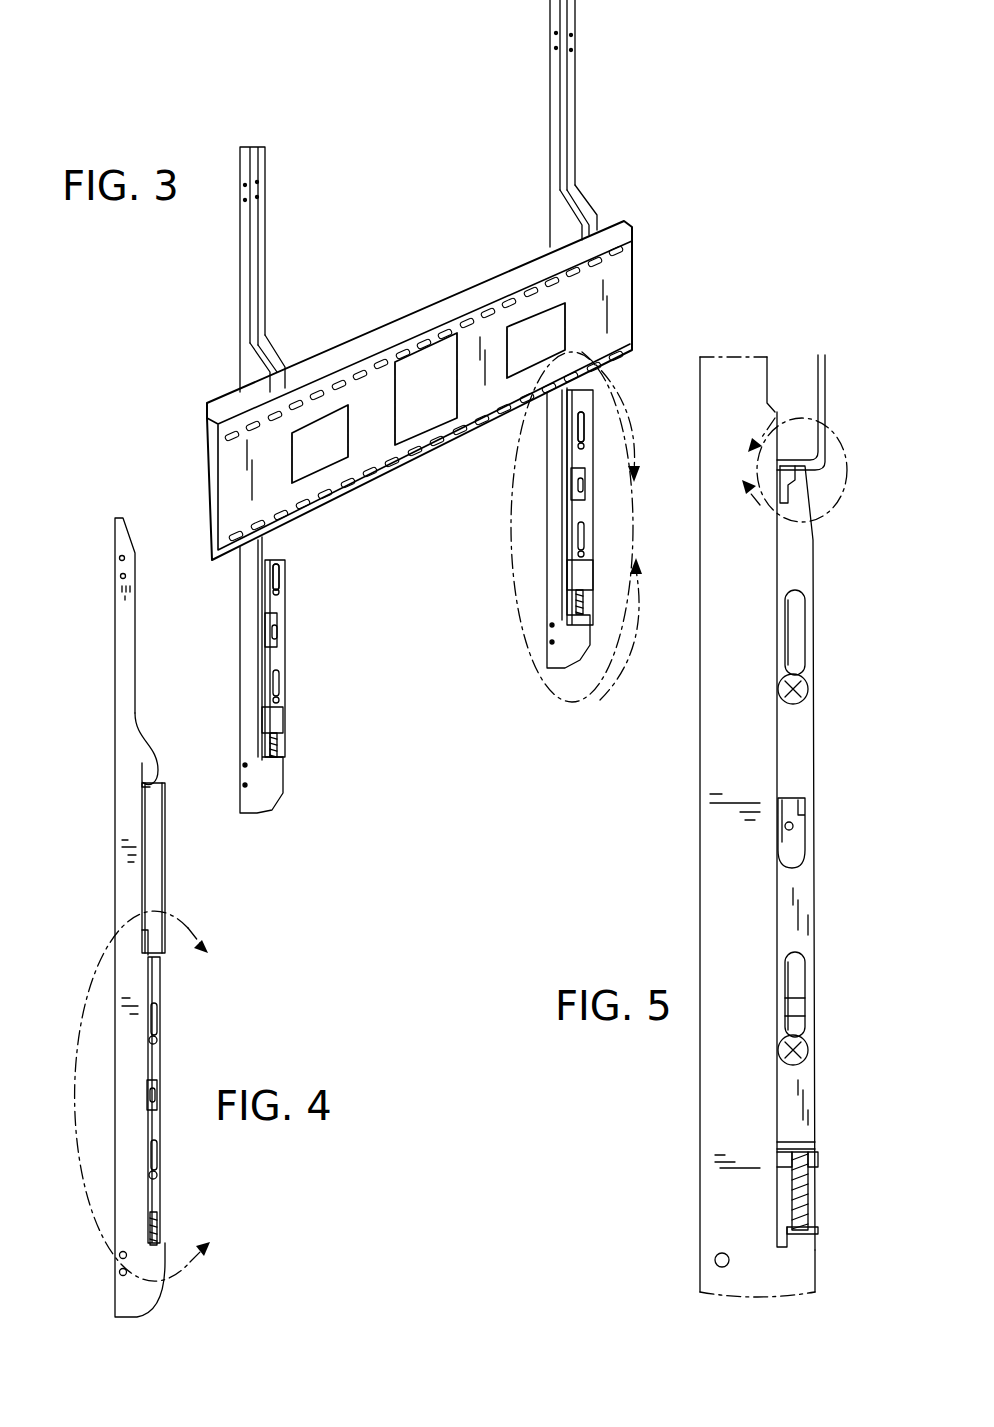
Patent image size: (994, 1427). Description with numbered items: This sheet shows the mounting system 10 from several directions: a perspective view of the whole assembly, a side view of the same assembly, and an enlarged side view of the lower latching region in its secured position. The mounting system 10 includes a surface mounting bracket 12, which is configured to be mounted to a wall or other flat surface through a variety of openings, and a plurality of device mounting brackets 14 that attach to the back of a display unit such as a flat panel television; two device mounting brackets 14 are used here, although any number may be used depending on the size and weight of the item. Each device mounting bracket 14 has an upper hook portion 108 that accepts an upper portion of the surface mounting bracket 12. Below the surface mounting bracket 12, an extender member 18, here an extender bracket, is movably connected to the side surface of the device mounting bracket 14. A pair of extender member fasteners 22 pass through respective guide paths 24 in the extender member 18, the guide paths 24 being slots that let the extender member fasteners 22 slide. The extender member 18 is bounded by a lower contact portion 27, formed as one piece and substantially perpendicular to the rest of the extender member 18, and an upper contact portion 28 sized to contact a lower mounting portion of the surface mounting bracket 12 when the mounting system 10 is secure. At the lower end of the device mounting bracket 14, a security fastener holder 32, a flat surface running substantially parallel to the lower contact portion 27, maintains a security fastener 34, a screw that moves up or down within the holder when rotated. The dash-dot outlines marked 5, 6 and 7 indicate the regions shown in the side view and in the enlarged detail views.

In FIG. 3, the mounting system 10 is at (340, 64).
In FIG. 3, the surface mounting bracket 12 is at (403, 323).
In FIG. 4, the surface mounting bracket 12 is at (165, 838).
In FIG. 3, the device mounting bracket 14 is at (260, 164).
In FIG. 4, the device mounting bracket 14 is at (130, 672).
In FIG. 5, the device mounting bracket 14 is at (725, 378).
In FIG. 3, the extender member 18 is at (580, 465).
In FIG. 4, the extender member 18 is at (157, 1127).
In FIG. 5, the extender member 18 is at (788, 755).
In FIG. 5, the extender member fastener 22 is at (787, 677).
In FIG. 3, the guide path 24 is at (583, 528).
In FIG. 5, the guide path 24 is at (795, 605).
In FIG. 5, the lower contact portion 27 is at (798, 1142).
In FIG. 5, the upper contact portion 28 is at (792, 470).
In FIG. 5, the security fastener holder 32 is at (803, 1235).
In FIG. 3, the security fastener 34 is at (570, 597).
In FIG. 4, the security fastener 34 is at (160, 1228).
In FIG. 5, the security fastener 34 is at (797, 1192).
In FIG. 3, the upper hook portion 108 is at (587, 212).
In FIG. 4, the upper hook portion 108 is at (143, 749).
In FIG. 4, the section view indicator 5 is at (152, 1096).
In FIG. 5, the detail view indicator 6 is at (793, 471).
In FIG. 3, the detail view indicator 7 is at (586, 527).